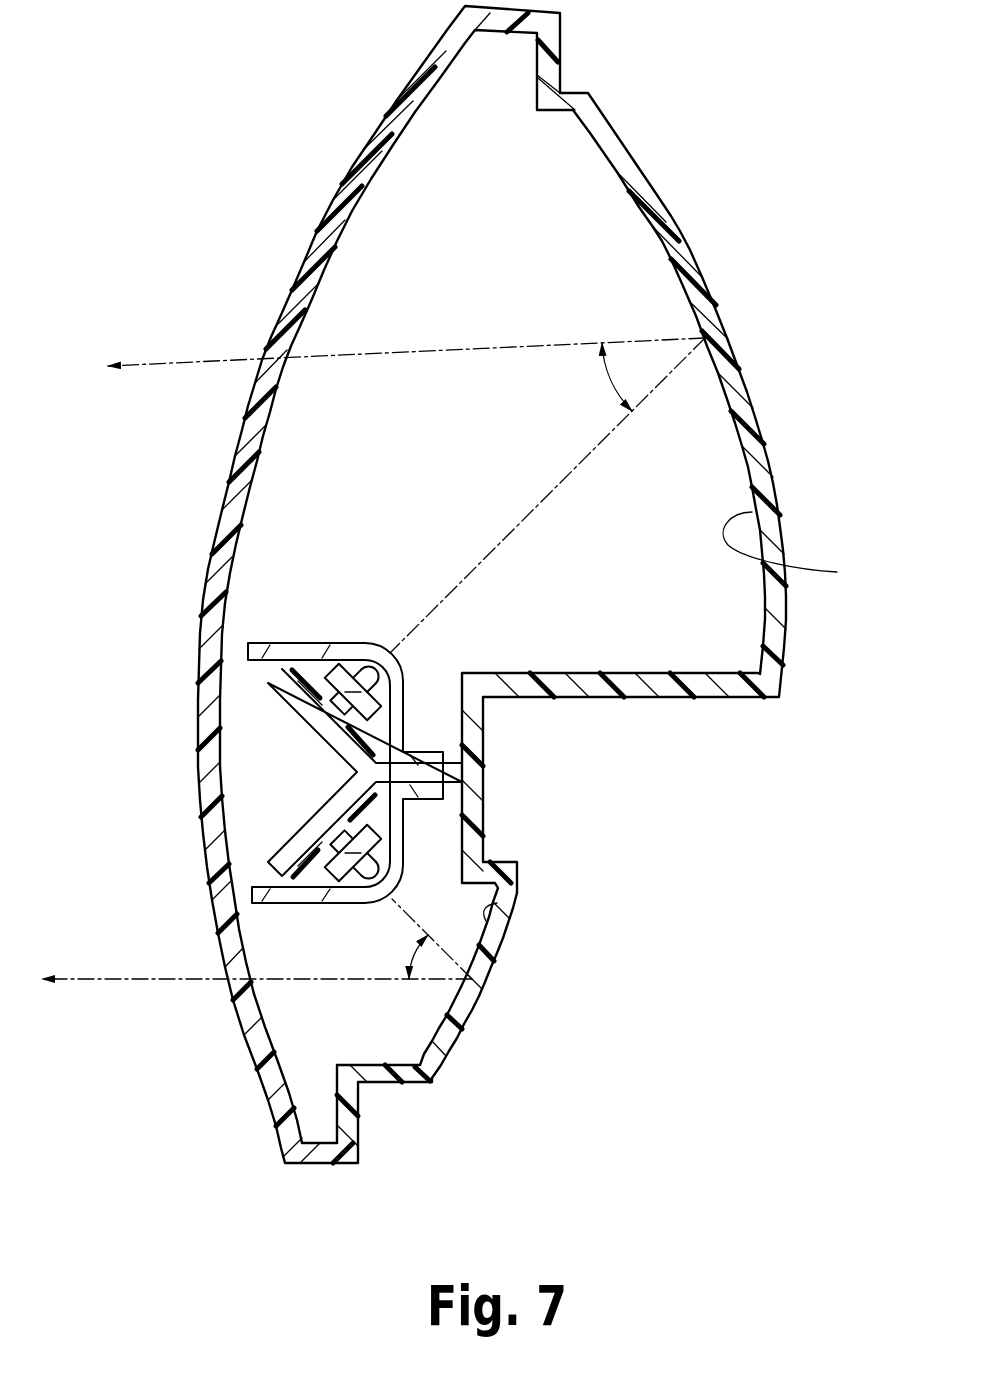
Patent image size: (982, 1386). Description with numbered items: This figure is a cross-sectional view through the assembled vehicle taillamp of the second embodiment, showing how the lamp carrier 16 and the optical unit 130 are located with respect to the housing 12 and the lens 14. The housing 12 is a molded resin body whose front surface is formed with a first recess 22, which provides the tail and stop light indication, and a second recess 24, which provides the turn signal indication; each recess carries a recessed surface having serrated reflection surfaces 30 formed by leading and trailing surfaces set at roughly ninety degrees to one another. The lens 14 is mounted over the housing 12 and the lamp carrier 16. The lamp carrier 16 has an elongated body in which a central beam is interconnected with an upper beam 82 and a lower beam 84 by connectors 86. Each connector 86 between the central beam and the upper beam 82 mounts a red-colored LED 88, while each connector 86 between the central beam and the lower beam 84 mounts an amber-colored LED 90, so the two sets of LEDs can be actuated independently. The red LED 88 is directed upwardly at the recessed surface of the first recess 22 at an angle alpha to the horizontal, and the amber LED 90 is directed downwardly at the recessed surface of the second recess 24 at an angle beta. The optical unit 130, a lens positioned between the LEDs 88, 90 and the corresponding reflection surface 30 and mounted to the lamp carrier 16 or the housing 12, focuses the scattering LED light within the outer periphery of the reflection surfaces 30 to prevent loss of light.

The housing 12 is at (657, 195).
The lens 14 is at (333, 202).
The lamp carrier 16 is at (278, 853).
The first recess 22 is at (706, 335).
The second recess 24 is at (482, 1017).
The reflection surface 30 is at (497, 903).
The upper beam 82 is at (298, 697).
The lower beam 84 is at (318, 840).
The connector 86 is at (362, 795).
The red-colored LED 88 is at (346, 677).
The amber-colored LED 90 is at (352, 862).
The optical unit 130 is at (293, 642).